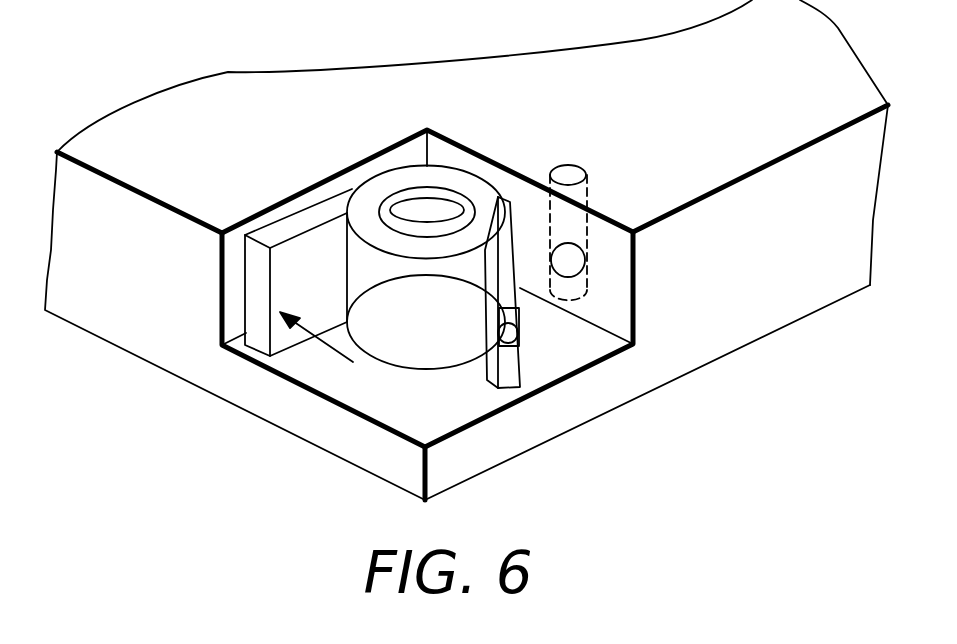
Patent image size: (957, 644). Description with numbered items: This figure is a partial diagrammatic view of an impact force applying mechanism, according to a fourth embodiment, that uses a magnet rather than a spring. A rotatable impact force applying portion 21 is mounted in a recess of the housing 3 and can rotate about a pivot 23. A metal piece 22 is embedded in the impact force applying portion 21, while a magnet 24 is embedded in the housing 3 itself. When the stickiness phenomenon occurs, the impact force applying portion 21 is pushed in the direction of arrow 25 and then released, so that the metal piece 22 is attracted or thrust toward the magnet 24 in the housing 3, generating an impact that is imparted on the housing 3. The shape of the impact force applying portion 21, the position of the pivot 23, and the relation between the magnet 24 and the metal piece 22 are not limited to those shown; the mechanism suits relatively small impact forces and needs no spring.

The housing 3 is at (757, 293).
The impact force applying portion 21 is at (257, 308).
The metal piece 22 is at (520, 360).
The pivot 23 is at (397, 203).
The magnet 24 is at (583, 275).
The arrow 25 is at (342, 378).